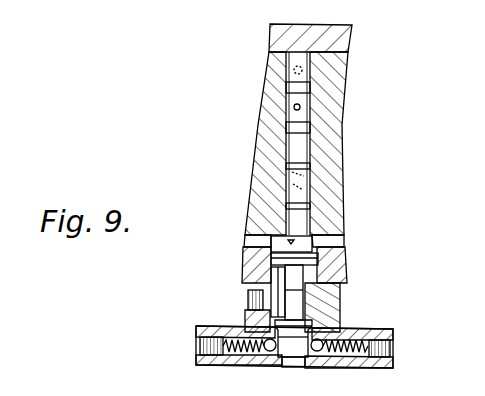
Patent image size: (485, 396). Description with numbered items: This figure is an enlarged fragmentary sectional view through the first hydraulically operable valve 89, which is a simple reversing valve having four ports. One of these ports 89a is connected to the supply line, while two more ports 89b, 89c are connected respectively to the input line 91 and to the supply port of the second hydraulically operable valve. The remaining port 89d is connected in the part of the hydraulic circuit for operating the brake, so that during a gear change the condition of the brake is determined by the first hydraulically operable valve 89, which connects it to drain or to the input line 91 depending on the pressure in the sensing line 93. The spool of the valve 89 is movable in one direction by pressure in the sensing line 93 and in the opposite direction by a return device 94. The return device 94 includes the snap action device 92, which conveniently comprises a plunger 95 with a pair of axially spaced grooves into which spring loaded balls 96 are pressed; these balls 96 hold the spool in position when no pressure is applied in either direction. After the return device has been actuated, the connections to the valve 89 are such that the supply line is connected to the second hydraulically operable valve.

The first hydraulically operable valve 89 is at (287, 144).
The port 89a is at (284, 168).
The port 89b is at (310, 189).
The port 89c is at (268, 124).
The port 89d is at (285, 214).
The input line 91 is at (336, 200).
The sensing line 93 is at (313, 78).
The return device 94 is at (316, 275).
The plunger 95 is at (289, 336).
The spring loaded balls 96 is at (265, 341).
The snap action device 92 is at (306, 366).